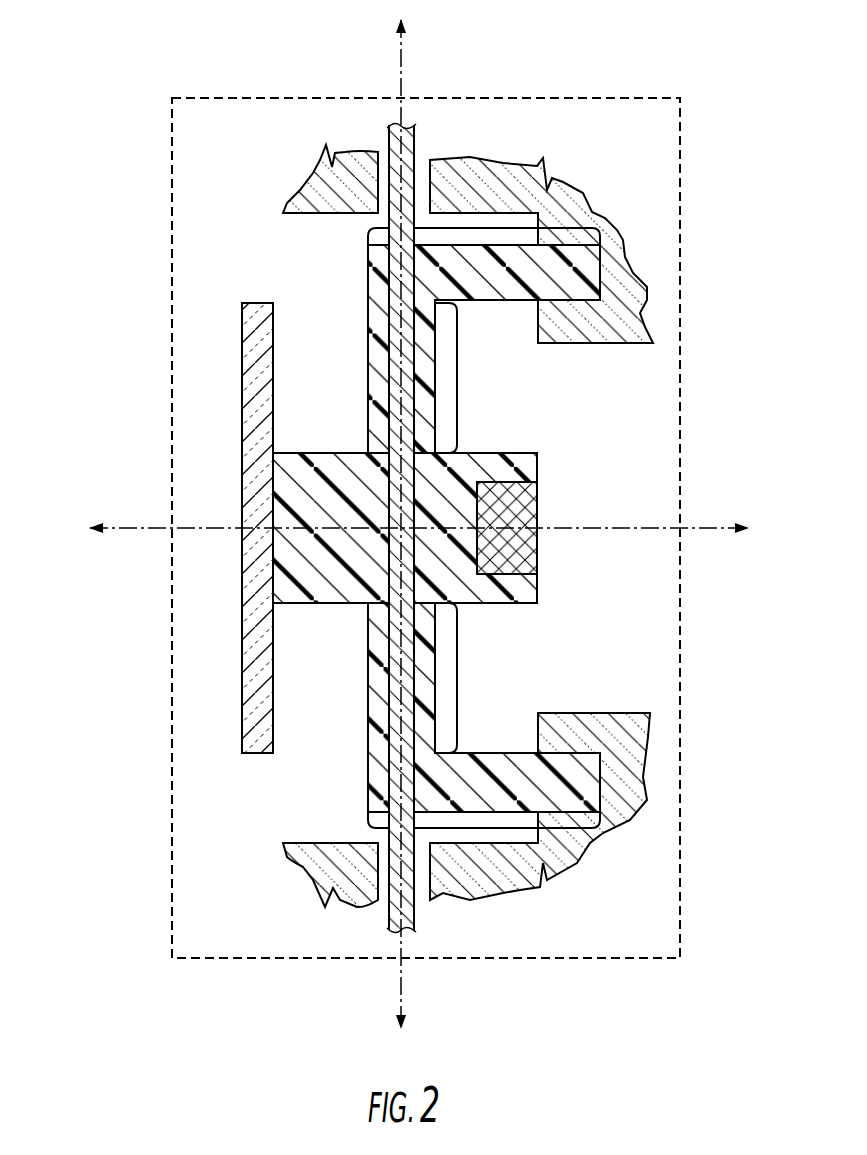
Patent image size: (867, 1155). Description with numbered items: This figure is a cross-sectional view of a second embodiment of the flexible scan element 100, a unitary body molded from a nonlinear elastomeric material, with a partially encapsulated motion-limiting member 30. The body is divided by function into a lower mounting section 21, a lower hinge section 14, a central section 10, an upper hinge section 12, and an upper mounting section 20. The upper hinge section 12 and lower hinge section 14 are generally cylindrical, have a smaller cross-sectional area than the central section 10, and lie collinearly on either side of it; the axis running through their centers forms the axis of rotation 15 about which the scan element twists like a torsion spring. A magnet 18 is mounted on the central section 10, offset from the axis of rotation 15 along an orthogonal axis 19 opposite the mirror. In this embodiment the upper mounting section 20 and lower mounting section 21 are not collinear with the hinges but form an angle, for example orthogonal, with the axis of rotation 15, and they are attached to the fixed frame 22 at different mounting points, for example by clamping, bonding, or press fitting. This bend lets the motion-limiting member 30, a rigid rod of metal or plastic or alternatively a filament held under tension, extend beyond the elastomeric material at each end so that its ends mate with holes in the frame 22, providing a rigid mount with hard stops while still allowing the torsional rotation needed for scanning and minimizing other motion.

The flexible scan element 100 is at (172, 98).
The axis of rotation 15 is at (402, 82).
The upper mounting section 20 is at (485, 228).
The lower mounting section 21 is at (485, 828).
The frame 22 is at (583, 197).
The upper hinge section 12 is at (462, 378).
The lower hinge section 14 is at (460, 680).
The central section 10 is at (426, 528).
The motion-limiting member 30 is at (385, 492).
The magnet 18 is at (545, 545).
The orthogonal axis 19 is at (128, 527).